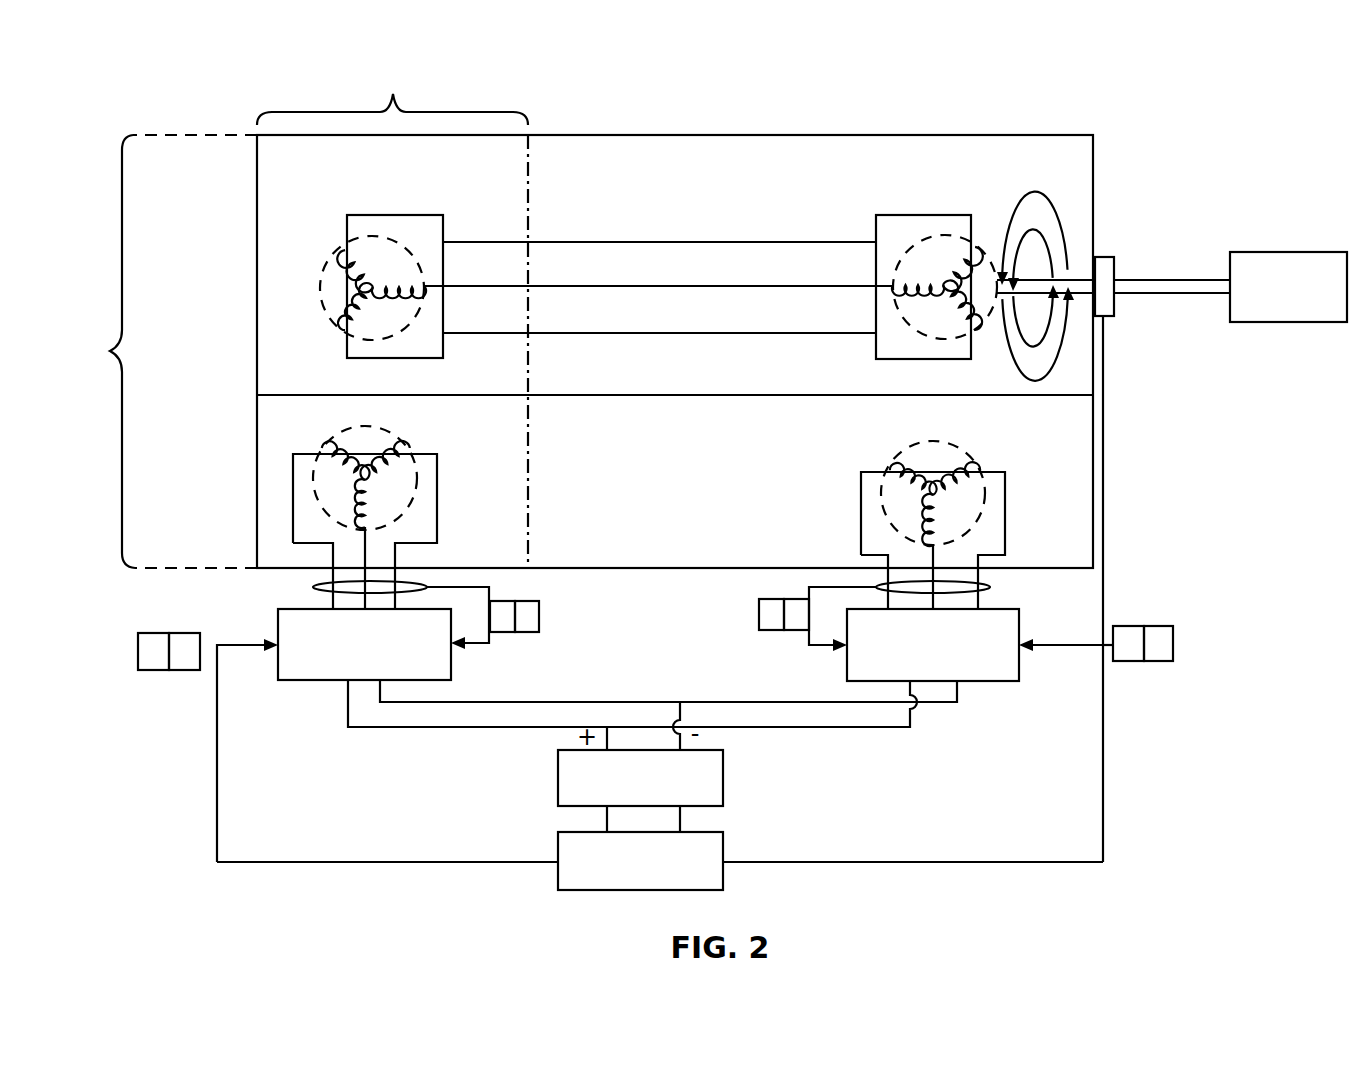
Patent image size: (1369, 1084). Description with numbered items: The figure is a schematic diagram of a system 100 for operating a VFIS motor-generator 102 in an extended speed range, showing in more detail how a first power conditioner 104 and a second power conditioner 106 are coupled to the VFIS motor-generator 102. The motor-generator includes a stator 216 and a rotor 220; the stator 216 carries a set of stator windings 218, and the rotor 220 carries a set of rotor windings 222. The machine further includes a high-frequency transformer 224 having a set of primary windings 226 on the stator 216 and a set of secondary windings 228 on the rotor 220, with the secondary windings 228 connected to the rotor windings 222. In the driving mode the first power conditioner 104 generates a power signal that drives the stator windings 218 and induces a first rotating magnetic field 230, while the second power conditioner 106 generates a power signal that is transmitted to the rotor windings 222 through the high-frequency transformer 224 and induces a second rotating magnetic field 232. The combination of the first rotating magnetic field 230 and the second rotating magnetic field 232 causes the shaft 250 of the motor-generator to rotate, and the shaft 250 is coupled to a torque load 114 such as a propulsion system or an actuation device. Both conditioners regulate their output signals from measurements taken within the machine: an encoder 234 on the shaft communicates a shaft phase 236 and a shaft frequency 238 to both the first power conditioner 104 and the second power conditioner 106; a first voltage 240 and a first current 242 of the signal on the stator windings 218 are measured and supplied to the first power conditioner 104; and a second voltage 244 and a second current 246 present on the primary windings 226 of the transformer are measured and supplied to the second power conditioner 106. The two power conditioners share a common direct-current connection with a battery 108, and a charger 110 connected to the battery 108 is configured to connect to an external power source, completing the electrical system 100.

The system 100 is at (174, 72).
The VFIS motor-generator 102 is at (157, 351).
The first power conditioner 104 is at (996, 681).
The second power conditioner 106 is at (318, 680).
The battery 108 is at (558, 778).
The charger 110 is at (558, 852).
The torque load 114 is at (1288, 252).
The stator 216 is at (257, 447).
The set of stator windings 218 is at (916, 444).
The rotor 220 is at (257, 313).
The set of rotor windings 222 is at (910, 247).
The high-frequency transformer 224 is at (392, 316).
The set of primary windings 226 is at (348, 432).
The set of secondary windings 228 is at (343, 250).
The first rotating magnetic field 230 is at (1034, 379).
The second rotating magnetic field 232 is at (1034, 230).
The encoder 234 is at (1104, 257).
The shaft phase 236 is at (138, 648).
The shaft frequency 238 is at (185, 670).
The first voltage 240 is at (759, 618).
The first current 242 is at (797, 630).
The second voltage 244 is at (498, 632).
The second current 246 is at (539, 615).
The shaft 250 is at (1165, 294).